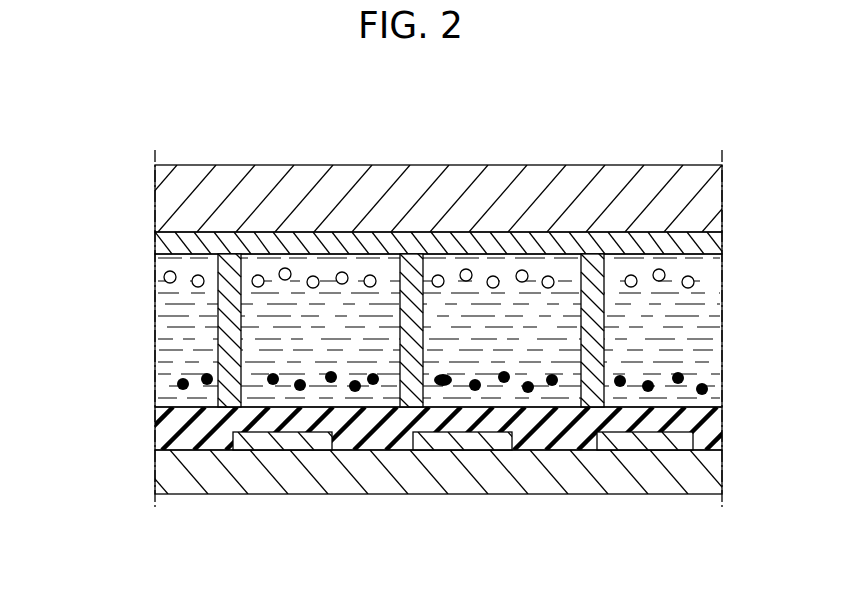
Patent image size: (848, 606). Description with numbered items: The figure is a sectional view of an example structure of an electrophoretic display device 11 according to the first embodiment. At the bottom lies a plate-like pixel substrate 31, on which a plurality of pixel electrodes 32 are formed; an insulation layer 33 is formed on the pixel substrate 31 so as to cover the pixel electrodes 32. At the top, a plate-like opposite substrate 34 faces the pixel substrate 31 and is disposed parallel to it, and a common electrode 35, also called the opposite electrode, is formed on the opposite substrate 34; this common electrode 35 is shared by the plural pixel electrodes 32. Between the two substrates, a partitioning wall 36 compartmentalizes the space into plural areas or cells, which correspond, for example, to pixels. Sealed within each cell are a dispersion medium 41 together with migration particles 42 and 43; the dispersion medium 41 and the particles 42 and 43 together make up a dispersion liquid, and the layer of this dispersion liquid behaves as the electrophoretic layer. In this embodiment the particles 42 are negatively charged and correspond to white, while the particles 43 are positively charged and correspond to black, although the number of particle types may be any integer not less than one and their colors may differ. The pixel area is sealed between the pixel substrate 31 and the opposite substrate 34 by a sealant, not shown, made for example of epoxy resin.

The electrophoretic display device 11 is at (664, 110).
The pixel substrate 31 is at (228, 477).
The pixel electrodes 32 is at (315, 451).
The insulation layer 33 is at (366, 448).
The opposite substrate 34 is at (171, 194).
The common electrode 35 is at (166, 245).
The partitioning wall 36 is at (404, 328).
The dispersion medium 41 is at (171, 313).
The particles 42 is at (164, 279).
The particles 43 is at (177, 386).